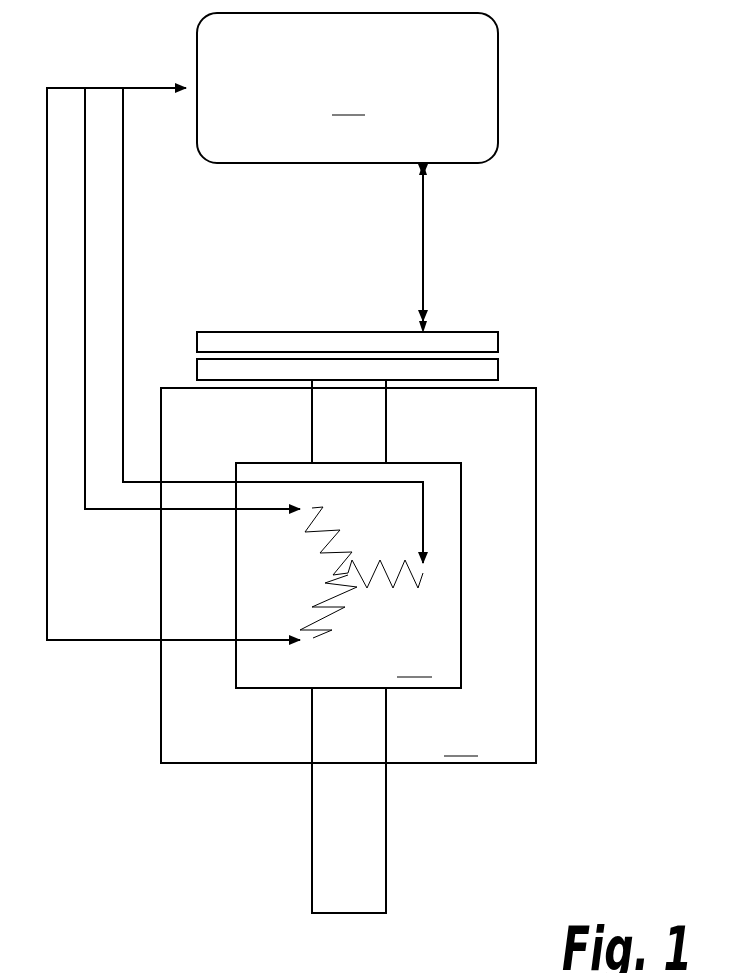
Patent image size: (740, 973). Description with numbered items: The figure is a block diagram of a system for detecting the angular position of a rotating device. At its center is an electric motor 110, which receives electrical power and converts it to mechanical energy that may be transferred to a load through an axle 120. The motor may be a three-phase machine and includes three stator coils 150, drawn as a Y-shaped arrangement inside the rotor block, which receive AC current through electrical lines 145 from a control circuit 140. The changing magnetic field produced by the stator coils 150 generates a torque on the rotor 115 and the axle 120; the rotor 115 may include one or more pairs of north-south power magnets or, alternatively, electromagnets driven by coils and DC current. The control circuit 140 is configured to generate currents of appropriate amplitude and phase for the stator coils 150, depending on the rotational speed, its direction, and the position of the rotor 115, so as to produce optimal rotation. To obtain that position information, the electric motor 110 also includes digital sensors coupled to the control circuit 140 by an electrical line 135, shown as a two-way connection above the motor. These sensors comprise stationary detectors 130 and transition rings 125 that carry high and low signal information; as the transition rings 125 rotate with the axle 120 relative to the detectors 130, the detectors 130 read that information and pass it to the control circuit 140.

The electric motor 110 is at (348, 575).
The rotor 115 is at (348, 575).
The axle 120 is at (386, 872).
The transition rings 125 is at (498, 375).
The detectors 130 is at (460, 332).
The electrical line 135 is at (425, 243).
The control circuit 140 is at (347, 88).
The electrical lines 145 is at (160, 87).
The stator coils 150 is at (427, 572).